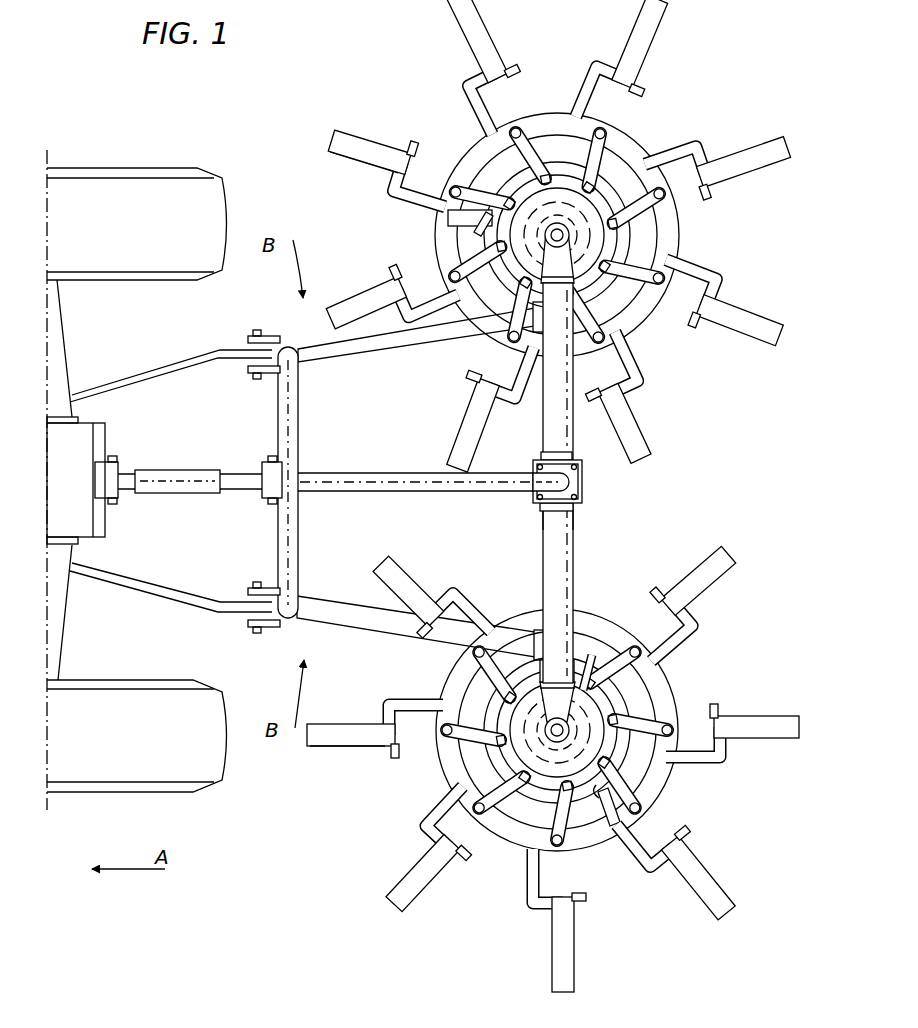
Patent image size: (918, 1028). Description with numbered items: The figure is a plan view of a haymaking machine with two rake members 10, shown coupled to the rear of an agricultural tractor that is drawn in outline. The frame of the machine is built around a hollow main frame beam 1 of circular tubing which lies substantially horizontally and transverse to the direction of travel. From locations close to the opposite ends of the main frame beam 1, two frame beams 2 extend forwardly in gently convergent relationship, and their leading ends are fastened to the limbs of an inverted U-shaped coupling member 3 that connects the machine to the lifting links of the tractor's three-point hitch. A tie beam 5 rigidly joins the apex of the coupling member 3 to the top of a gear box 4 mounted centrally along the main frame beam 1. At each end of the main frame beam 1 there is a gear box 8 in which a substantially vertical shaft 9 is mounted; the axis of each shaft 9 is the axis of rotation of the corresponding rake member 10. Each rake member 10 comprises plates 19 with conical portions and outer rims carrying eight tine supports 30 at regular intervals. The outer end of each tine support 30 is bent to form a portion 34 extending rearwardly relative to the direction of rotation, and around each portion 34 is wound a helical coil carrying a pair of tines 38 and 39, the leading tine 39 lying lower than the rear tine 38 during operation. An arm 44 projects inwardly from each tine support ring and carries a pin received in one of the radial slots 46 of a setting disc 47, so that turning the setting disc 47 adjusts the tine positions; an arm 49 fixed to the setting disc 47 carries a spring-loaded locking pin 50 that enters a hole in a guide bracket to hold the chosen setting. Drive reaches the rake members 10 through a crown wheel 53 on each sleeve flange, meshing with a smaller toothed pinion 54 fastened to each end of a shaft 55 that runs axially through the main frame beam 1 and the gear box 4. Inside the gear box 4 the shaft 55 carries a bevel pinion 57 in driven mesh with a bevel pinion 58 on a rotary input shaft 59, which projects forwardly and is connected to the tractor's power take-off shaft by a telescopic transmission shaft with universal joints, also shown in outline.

The main frame beam 1 is at (575, 535).
The frame beams 2 is at (352, 350).
The coupling member 3 is at (278, 434).
The gear box 4 is at (580, 488).
The tie beam 5 is at (348, 492).
The gear box 8 is at (606, 206).
The shaft 9 is at (564, 190).
The rake member 10 is at (553, 496).
The plates 19 is at (480, 163).
The tine support 30 is at (642, 360).
The bent portion 34 is at (700, 318).
The rear tine 38 is at (362, 105).
The leading tine 39 is at (342, 154).
The arm 44 is at (668, 197).
The radial slots 46 is at (588, 680).
The setting disc 47 is at (511, 309).
The arm 49 is at (450, 222).
The locking pin 50 is at (462, 238).
The crown wheel 53 is at (612, 252).
The toothed pinion 54 is at (576, 276).
The shaft 55 is at (560, 421).
The bevel pinion 57 is at (582, 479).
The bevel pinion 58 is at (545, 468).
The rotary input shaft 59 is at (526, 492).